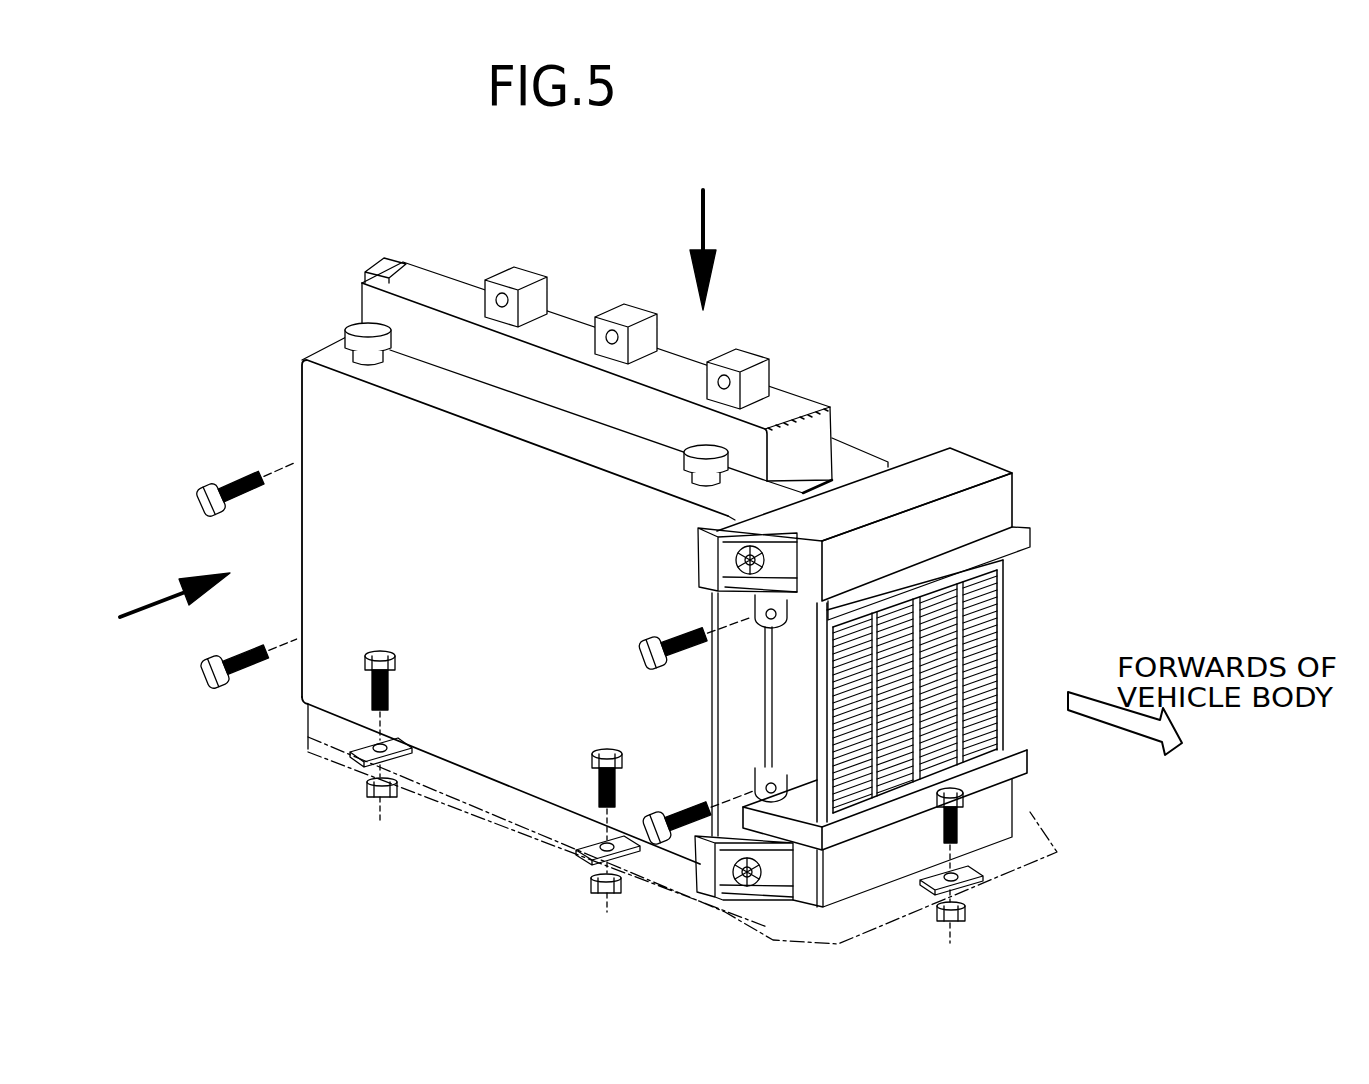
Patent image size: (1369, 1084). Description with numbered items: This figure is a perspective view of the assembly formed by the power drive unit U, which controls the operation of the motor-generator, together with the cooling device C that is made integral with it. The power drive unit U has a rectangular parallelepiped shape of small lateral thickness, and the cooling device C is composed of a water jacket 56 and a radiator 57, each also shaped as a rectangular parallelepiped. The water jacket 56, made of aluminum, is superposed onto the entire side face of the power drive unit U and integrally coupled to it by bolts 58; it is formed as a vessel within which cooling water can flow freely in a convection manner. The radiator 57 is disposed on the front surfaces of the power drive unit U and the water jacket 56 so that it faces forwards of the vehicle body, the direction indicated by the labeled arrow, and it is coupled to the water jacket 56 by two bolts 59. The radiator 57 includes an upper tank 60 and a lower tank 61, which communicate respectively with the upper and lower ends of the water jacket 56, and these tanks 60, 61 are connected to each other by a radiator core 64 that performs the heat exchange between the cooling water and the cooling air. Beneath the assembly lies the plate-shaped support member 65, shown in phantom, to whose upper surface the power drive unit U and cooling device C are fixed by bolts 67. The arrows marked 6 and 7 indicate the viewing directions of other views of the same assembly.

The water jacket 56 is at (745, 490).
The radiator 57 is at (953, 468).
The bolts 58 is at (226, 486).
The bolts 59 is at (737, 567).
The upper tank 60 is at (1010, 497).
The lower tank 61 is at (1007, 795).
The radiator core 64 is at (990, 648).
The support member 65 is at (463, 793).
The bolts 67 is at (387, 650).
The power drive unit U is at (460, 283).
The cooling device C is at (807, 336).
The viewing direction arrow 6 is at (154, 617).
The viewing direction arrow 7 is at (708, 217).